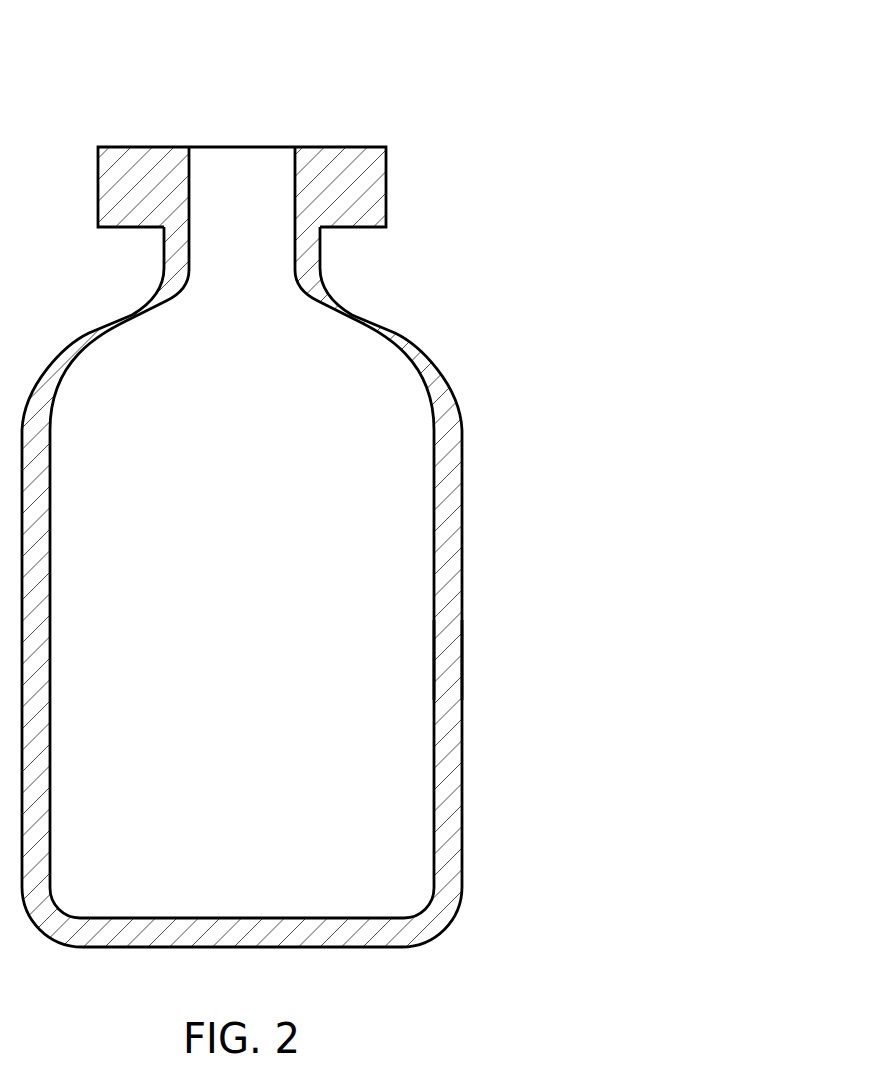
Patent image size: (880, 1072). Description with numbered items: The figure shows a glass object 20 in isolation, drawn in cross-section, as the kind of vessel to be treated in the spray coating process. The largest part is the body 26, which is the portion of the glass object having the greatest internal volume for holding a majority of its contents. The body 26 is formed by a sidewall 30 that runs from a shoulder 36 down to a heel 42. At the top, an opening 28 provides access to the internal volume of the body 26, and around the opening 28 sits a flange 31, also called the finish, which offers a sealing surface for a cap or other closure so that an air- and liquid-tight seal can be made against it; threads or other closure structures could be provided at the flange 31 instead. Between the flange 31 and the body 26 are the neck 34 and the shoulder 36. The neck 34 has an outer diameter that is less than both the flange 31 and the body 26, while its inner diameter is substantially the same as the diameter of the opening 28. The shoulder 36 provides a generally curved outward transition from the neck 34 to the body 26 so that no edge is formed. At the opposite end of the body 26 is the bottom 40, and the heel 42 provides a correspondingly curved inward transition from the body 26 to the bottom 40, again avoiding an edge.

The container 20 is at (410, 99).
The body 26 is at (470, 544).
The opening 28 is at (241, 165).
The sidewall 30 is at (452, 667).
The flange 31 is at (110, 200).
The neck 34 is at (140, 268).
The shoulder 36 is at (413, 328).
The bottom 40 is at (118, 956).
The heel 42 is at (478, 934).